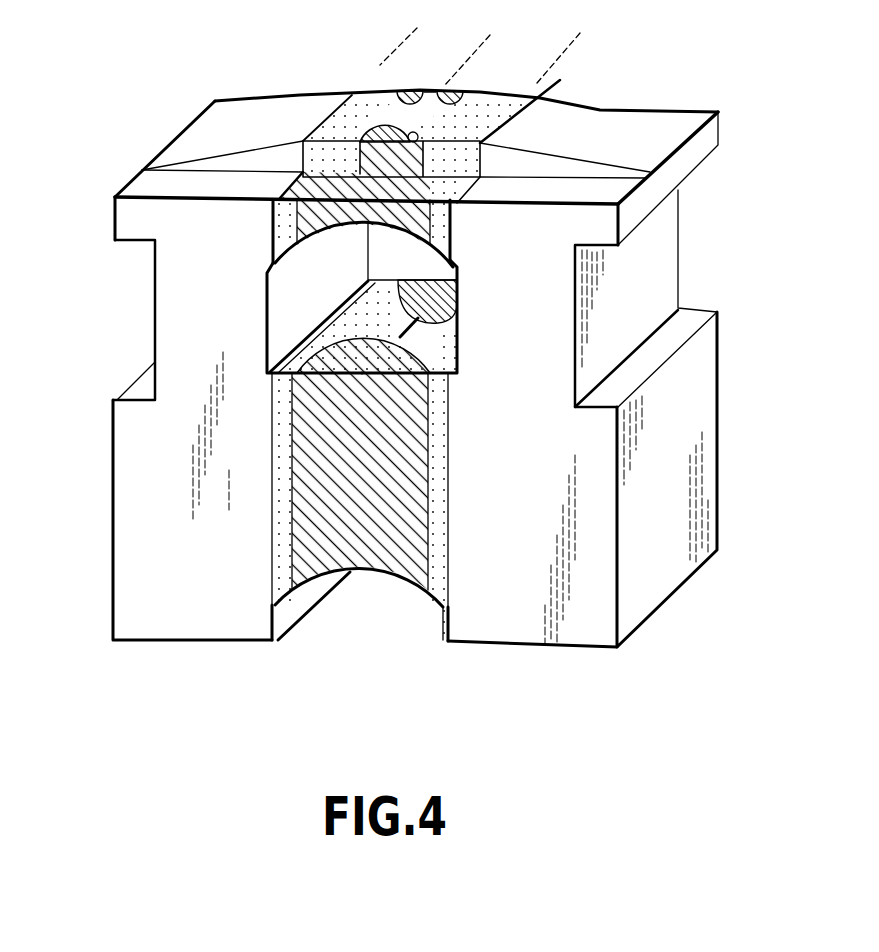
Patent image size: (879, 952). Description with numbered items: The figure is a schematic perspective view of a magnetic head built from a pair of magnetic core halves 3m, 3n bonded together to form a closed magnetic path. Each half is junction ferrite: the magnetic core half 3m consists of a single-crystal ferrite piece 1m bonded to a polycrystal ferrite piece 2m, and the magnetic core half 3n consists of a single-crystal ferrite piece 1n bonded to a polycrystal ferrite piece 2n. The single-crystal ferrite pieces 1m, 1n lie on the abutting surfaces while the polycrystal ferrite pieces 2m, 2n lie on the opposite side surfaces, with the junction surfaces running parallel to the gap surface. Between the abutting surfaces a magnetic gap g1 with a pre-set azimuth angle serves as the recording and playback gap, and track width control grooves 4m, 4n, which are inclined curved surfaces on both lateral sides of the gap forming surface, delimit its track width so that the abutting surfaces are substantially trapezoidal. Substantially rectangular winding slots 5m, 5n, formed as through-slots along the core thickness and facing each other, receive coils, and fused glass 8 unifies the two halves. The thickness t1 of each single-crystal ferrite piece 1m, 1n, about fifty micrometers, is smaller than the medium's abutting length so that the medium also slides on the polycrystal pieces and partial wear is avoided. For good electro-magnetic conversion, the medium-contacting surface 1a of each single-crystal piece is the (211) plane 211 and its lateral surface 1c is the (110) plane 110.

The surface having sliding contact with the magnetic recording medium 1a is at (416, 151).
The (211) plane 211 is at (335, 124).
The lateral surface 1c is at (410, 337).
The (110) plane 110 is at (292, 226).
The single-crystal ferrite piece 1m is at (272, 560).
The polycrystal ferrite piece 2m is at (163, 632).
The magnetic core half 3m is at (205, 465).
The single-crystal ferrite piece 1n is at (437, 580).
The polycrystal ferrite piece 2n is at (487, 632).
The magnetic core half 3n is at (565, 464).
The track width control groove 4m is at (383, 127).
The track width control groove 4n is at (462, 93).
The winding slot 5m is at (308, 292).
The winding slot 5n is at (452, 326).
The fused glass 8 is at (322, 182).
The magnetic gap g1 is at (430, 89).
The thickness of the single-crystal ferrite piece t1 is at (587, 37).